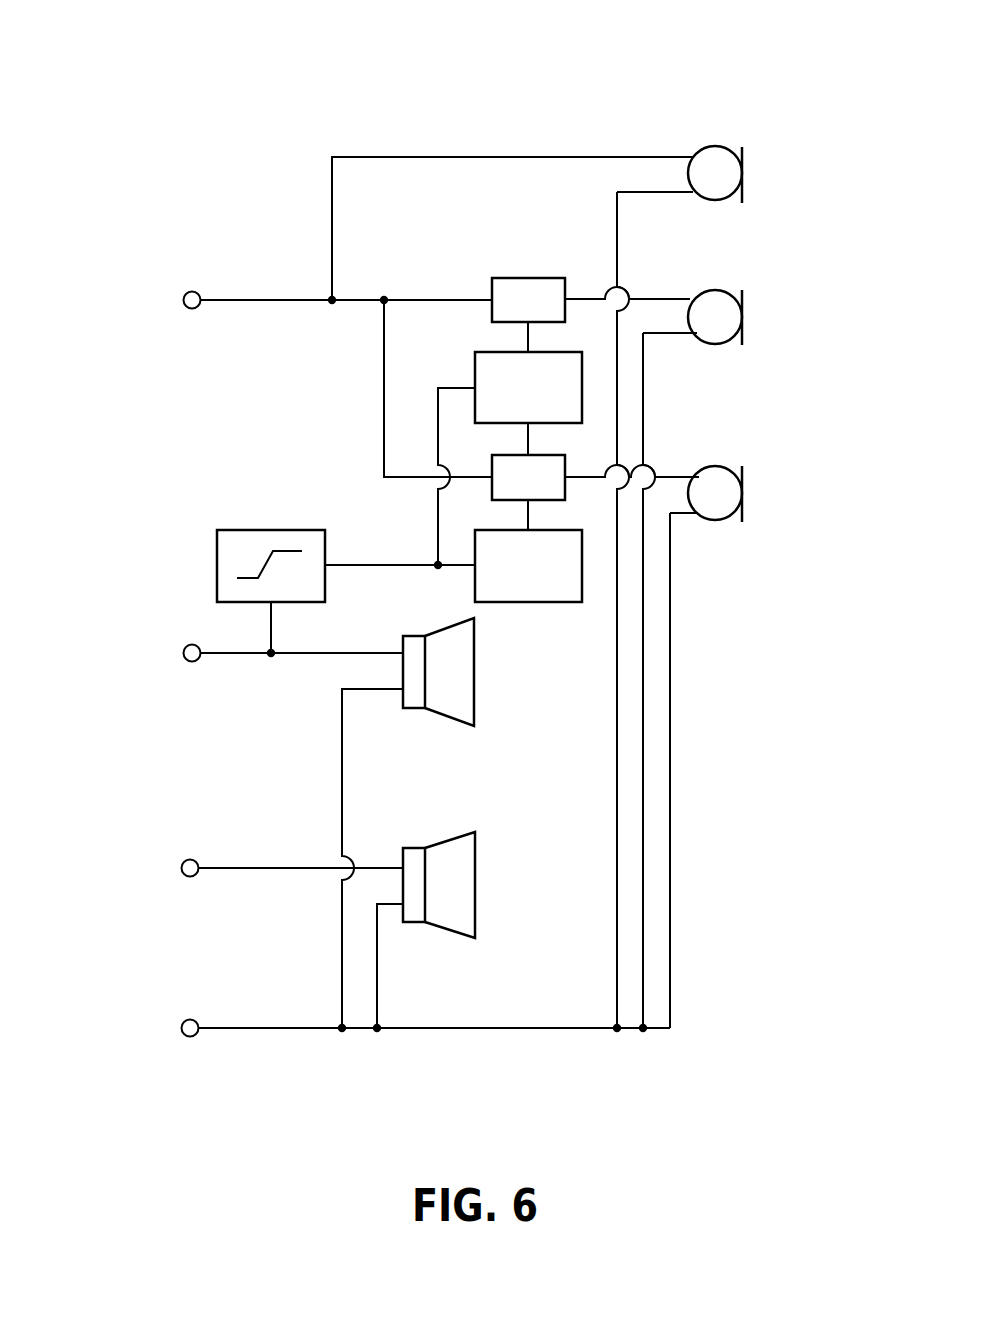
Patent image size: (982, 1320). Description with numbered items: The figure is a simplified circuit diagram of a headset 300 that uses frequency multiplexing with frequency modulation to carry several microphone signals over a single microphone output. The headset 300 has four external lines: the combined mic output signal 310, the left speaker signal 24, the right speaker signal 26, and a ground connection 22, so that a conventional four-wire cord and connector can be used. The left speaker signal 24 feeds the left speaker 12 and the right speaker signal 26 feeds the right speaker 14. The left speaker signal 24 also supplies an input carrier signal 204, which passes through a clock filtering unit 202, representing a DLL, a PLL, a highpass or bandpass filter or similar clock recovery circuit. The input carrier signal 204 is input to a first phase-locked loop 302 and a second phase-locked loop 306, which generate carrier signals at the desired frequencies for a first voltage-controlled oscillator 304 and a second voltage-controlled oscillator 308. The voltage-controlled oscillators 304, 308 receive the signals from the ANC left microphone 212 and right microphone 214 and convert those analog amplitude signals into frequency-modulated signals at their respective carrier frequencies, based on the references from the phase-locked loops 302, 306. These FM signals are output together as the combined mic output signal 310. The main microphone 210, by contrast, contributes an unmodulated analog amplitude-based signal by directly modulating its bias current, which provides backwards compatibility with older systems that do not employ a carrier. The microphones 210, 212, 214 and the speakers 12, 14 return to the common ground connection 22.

The headset 300 is at (204, 70).
The combined mic output signal 310 is at (243, 299).
The voltage-controlled oscillator 308 is at (520, 278).
The phase-locked loop 306 is at (486, 352).
The voltage-controlled oscillator 304 is at (565, 488).
The phase-locked loop 302 is at (520, 602).
The clock filtering unit 202 is at (262, 530).
The input carrier signal 204 is at (403, 563).
The left speaker signal 24 is at (313, 657).
The right speaker signal 26 is at (245, 866).
The ground connection 22 is at (261, 1018).
The left speaker 12 is at (502, 713).
The right speaker 14 is at (500, 875).
The main microphone 210 is at (766, 147).
The left microphone 212 is at (766, 304).
The right microphone 214 is at (768, 482).